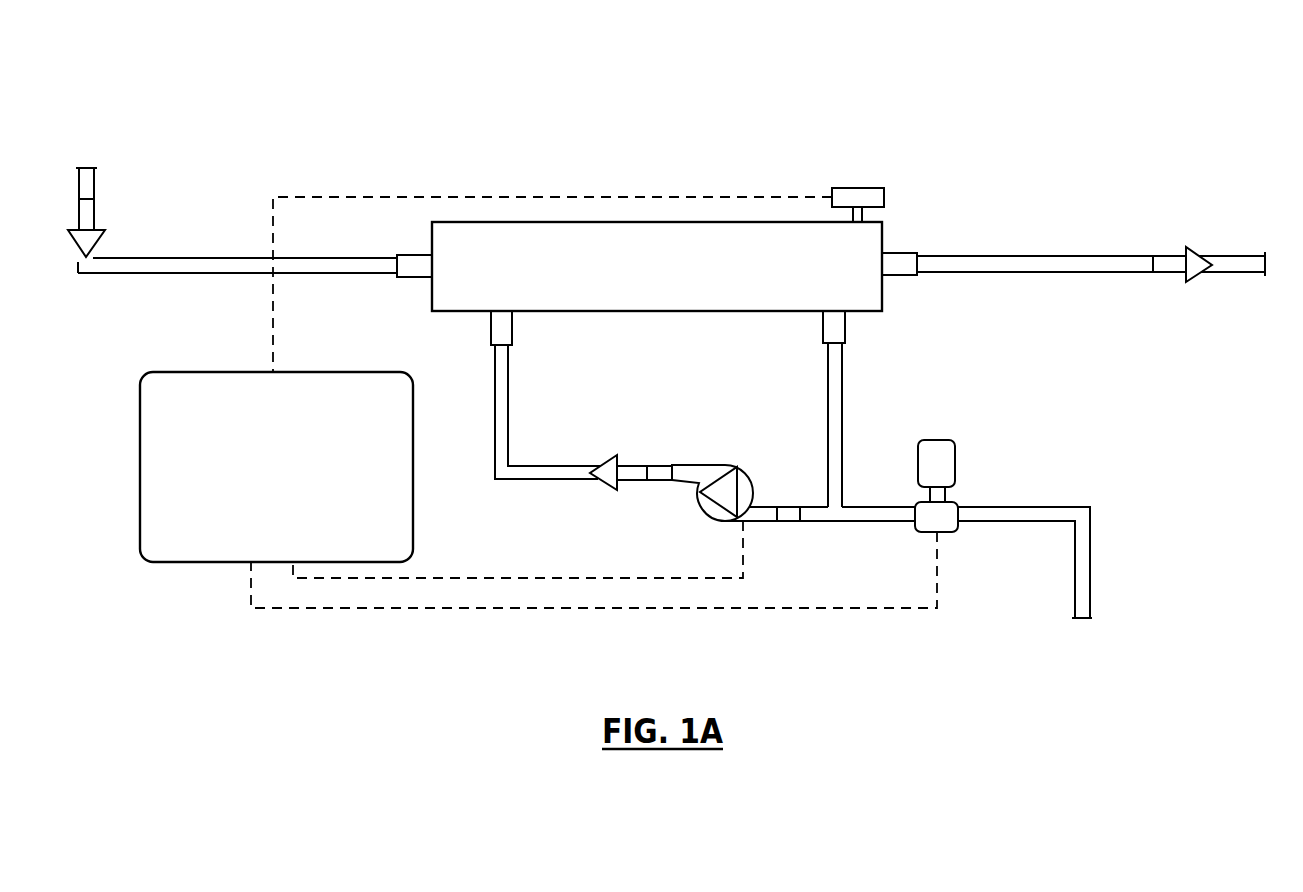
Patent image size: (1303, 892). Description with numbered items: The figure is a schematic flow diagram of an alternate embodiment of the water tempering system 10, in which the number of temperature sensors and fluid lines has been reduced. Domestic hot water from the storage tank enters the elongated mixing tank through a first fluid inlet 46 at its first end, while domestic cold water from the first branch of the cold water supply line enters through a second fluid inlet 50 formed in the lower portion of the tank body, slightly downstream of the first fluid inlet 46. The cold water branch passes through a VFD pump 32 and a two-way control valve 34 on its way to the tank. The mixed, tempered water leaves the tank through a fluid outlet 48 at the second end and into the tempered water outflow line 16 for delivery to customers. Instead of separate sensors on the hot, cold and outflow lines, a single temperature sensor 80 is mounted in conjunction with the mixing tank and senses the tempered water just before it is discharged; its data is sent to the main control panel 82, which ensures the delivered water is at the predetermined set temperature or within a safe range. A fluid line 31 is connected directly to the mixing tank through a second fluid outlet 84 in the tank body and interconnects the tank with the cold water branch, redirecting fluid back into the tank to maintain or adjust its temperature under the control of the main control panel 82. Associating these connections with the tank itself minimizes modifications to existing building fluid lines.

The water tempering system 10 is at (868, 80).
The first fluid inlet 46 is at (432, 277).
The temperature sensor 80 is at (885, 190).
The fluid outlet 48 is at (884, 277).
The tempered water outflow line 16 is at (1052, 257).
The second fluid inlet 50 is at (512, 327).
The second fluid outlet 84 is at (845, 325).
The fluid line 31 is at (842, 390).
The VFD pump 32 is at (698, 505).
The two-way control valve 34 is at (945, 440).
The main control panel 82 is at (288, 484).